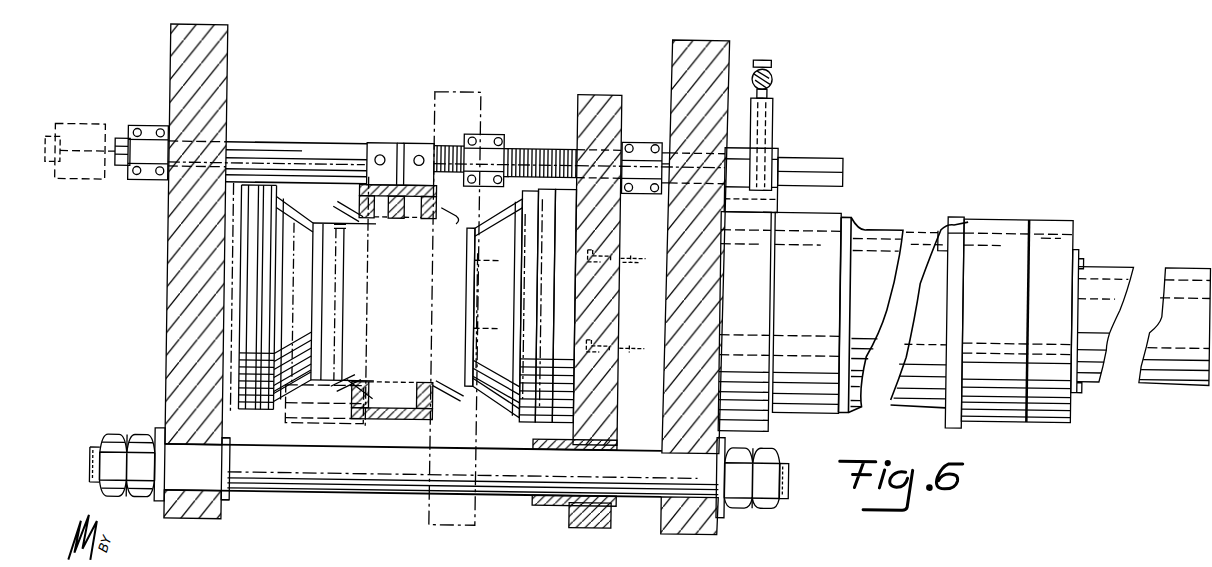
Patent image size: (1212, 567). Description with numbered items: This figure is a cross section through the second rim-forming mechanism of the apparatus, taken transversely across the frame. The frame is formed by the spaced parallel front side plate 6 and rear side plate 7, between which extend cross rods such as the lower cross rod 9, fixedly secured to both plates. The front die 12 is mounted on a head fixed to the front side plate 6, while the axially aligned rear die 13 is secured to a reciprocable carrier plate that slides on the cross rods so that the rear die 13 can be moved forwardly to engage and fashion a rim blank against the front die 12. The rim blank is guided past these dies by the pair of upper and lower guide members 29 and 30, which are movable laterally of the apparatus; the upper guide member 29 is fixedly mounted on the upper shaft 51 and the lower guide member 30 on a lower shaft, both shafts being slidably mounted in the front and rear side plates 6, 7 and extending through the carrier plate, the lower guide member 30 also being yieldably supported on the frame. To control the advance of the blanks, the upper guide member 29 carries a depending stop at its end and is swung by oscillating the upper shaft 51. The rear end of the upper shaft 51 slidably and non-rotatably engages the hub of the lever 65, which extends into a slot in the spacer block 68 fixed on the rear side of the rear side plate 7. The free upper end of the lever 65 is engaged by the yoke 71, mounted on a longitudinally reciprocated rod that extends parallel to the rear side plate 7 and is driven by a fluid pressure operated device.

The front side plate 6 is at (216, 524).
The rear side plate 7 is at (700, 527).
The lower cross rod 9 is at (345, 485).
The front die 12 is at (263, 186).
The rear die 13 is at (484, 228).
The upper guide member 29 is at (435, 209).
The lower guide member 30 is at (434, 416).
The upper shaft 51 is at (237, 168).
The lever 65 is at (768, 131).
The spacer block 68 is at (776, 195).
The yoke 71 is at (766, 106).